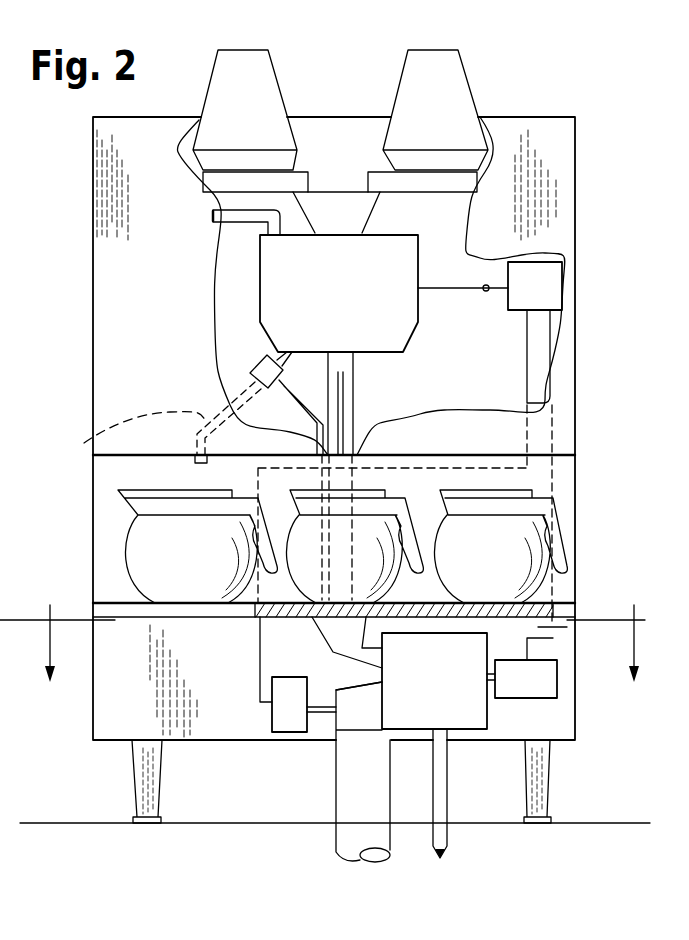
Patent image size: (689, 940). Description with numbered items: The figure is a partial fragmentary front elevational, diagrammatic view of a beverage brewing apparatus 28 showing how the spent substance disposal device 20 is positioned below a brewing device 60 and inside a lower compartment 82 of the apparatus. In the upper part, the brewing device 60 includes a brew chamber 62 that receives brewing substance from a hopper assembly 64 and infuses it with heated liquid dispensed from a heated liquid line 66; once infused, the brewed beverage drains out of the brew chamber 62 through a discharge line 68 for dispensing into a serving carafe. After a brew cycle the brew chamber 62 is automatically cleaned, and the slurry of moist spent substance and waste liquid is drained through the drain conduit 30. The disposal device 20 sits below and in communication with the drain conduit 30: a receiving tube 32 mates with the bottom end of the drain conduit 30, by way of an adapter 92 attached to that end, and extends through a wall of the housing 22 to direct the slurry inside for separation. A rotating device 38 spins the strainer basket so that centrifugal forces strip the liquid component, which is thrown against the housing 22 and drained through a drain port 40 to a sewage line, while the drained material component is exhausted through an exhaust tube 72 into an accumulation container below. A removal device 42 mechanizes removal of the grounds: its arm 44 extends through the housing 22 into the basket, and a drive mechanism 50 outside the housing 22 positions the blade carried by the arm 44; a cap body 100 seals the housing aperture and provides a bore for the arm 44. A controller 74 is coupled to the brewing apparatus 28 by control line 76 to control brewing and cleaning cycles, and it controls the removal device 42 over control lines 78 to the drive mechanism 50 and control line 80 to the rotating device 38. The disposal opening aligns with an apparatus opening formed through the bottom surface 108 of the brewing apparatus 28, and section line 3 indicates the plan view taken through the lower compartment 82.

The disposal device 20 is at (493, 800).
The housing 22 is at (417, 705).
The beverage brewing apparatus 28 is at (84, 394).
The drain conduit 30 is at (349, 376).
The receiving tube 32 is at (333, 652).
The rotating device 38 is at (547, 704).
The drain port 40 is at (448, 840).
The removal device 42 is at (255, 712).
The arm 44 is at (318, 714).
The drive mechanism 50 is at (282, 718).
The brewing device 60 is at (151, 295).
The brew chamber 62 is at (270, 297).
The hopper assembly 64 is at (213, 78).
The heated liquid line 66 is at (217, 245).
The discharge line 68 is at (84, 443).
The exhaust tube 72 is at (338, 840).
The controller 74 is at (551, 284).
The control line 76 is at (453, 290).
The control lines 78 is at (527, 372).
The control line 80 is at (550, 350).
The lower compartment 82 is at (566, 624).
The adapter 92 is at (313, 622).
The cap body 100 is at (343, 717).
The bottom surface 108 is at (518, 732).
The section line 3- 3 is at (324, 622).